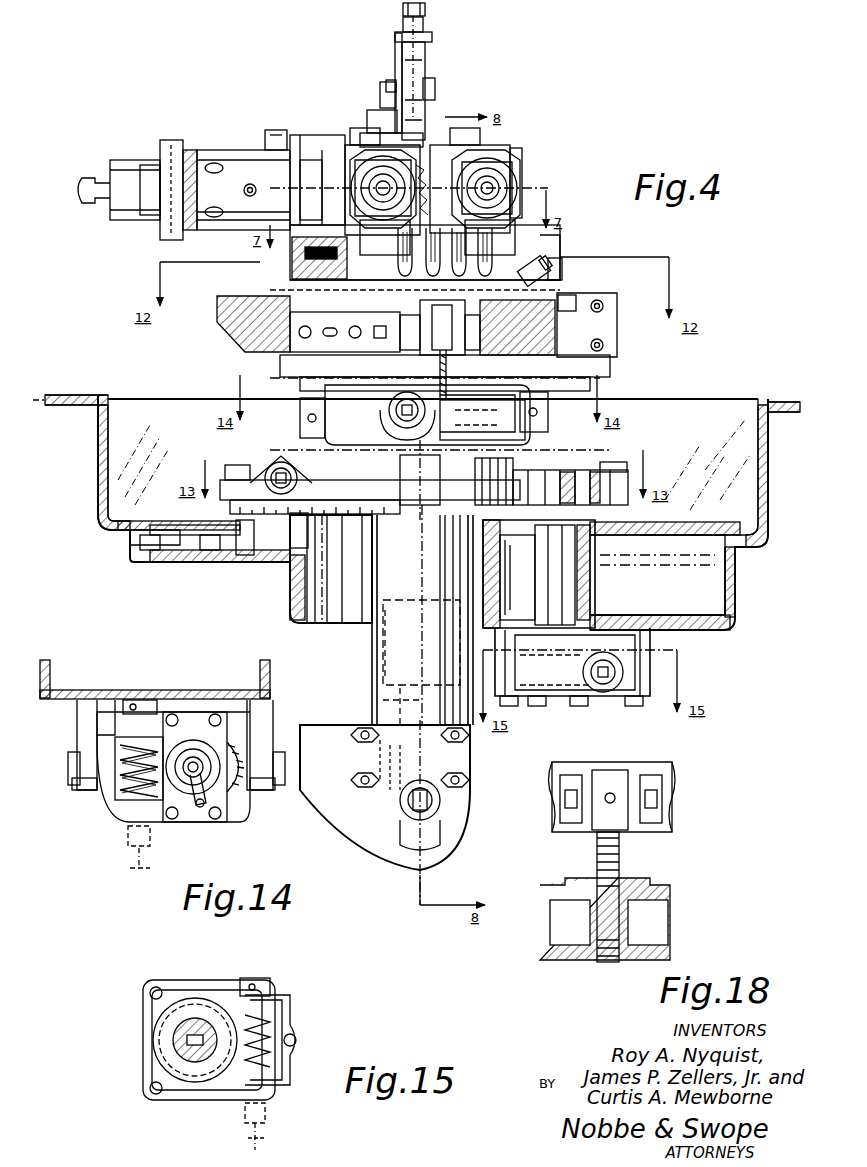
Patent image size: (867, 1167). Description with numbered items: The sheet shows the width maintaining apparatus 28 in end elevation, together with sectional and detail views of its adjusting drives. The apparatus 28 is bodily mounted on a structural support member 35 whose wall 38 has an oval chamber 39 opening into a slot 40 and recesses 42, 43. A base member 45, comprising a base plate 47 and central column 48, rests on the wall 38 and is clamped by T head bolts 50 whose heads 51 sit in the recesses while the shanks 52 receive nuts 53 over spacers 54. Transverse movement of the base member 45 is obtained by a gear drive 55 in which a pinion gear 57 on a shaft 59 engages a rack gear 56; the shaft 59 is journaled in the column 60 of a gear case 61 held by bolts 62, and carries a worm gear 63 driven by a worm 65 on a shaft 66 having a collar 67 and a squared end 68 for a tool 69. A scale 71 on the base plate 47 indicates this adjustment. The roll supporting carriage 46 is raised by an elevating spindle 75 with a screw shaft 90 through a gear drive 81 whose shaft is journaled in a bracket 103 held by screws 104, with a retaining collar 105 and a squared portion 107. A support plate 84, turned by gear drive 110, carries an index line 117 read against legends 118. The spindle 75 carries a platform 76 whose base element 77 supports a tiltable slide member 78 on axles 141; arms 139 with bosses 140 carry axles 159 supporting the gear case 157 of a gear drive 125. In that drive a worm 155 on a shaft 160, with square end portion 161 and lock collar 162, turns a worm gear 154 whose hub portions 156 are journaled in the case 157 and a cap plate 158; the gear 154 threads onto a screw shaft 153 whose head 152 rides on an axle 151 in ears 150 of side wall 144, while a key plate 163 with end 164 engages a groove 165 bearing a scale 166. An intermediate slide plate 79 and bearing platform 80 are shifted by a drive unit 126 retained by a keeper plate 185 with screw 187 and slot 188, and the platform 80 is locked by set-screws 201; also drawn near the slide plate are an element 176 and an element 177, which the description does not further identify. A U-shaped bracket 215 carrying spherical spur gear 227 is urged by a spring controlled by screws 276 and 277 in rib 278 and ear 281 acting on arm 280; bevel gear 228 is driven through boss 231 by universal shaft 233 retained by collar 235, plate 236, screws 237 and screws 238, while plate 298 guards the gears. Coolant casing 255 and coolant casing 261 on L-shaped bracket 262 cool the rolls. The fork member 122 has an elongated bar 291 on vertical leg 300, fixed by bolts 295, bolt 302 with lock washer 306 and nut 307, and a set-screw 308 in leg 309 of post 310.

In FIG. 4, the width maintaining apparatus 28 is at (230, 108).
In FIG. 4, the universal shaft 233 is at (92, 185).
In FIG. 4, the screws 238 is at (156, 210).
In FIG. 4, the retainer collar 235 is at (172, 142).
In FIG. 4, the plate 236 is at (193, 152).
In FIG. 4, the boss 231 is at (246, 162).
In FIG. 4, the screws 237 is at (243, 190).
In FIG. 4, the plate 298 is at (305, 135).
In FIG. 4, the bevel gear 228 is at (336, 160).
In FIG. 4, the coolant distributor casing 255 is at (362, 158).
In FIG. 4, the spherical spur gear 227 is at (434, 165).
In FIG. 4, the set-screw 308 is at (427, 11).
In FIG. 4, the horizontally disposed leg 309 is at (424, 30).
In FIG. 4, the post 310 is at (432, 46).
In FIG. 4, the nut 307 is at (398, 90).
In FIG. 4, the fork member 122 is at (428, 62).
In FIG. 4, the lock washer 306 is at (393, 92).
In FIG. 4, the bolts 295 is at (382, 108).
In FIG. 4, the elongated bar 291 is at (426, 75).
In FIG. 4, the bolt 302 is at (437, 92).
In FIG. 4, the vertical leg 300 is at (424, 110).
In FIG. 4, the L-shaped bracket 262 is at (515, 150).
In FIG. 4, the coolant casing 261 is at (505, 162).
In FIG. 4, the U-shaped bracket 215 is at (516, 178).
In FIG. 4, the screw 276 is at (288, 266).
In FIG. 4, the rib 278 is at (350, 230).
In FIG. 4, the arm 280 is at (523, 228).
In FIG. 4, the ear 281 is at (500, 256).
In FIG. 4, the screw 277 is at (545, 252).
In FIG. 4, the set-screws 201 is at (556, 270).
In FIG. 4, the intermediate slide plate 79 is at (250, 303).
In FIG. 4, the bearing platform 80 is at (268, 284).
In FIG. 4, the roll supporting carriage 46 is at (222, 325).
In FIG. 4, the tiltable slide member 78 is at (250, 338).
In FIG. 18, the tiltable slide member 78 is at (560, 770).
In FIG. 4, the screw 187 is at (303, 325).
In FIG. 4, the slot 188 is at (330, 325).
In FIG. 4, the keeper plate 185 is at (300, 344).
In FIG. 4, the head 152 is at (470, 322).
In FIG. 18, the head 152 is at (612, 780).
In FIG. 4, the screw shaft 153 is at (470, 356).
In FIG. 14, the screw shaft 153 is at (186, 757).
In FIG. 18, the screw shaft 153 is at (622, 865).
In FIG. 4, the drive unit 126 is at (322, 359).
In FIG. 4, the stop block 176 is at (577, 302).
In FIG. 4, the end bracket 177 is at (608, 307).
In FIG. 4, the axles 141 is at (582, 371).
In FIG. 4, the arms 139 is at (328, 389).
In FIG. 14, the arms 139 is at (78, 722).
In FIG. 4, the platform 76 is at (300, 407).
In FIG. 4, the base element 77 is at (332, 410).
In FIG. 14, the base element 77 is at (114, 688).
In FIG. 4, the axles 159 is at (340, 418).
In FIG. 14, the axles 159 is at (70, 762).
In FIG. 4, the gear drive 125 is at (408, 424).
In FIG. 14, the gear drive 125 is at (110, 815).
In FIG. 18, the gear drive 125 is at (692, 860).
In FIG. 4, the elevating spindle 75 is at (410, 441).
In FIG. 4, the gear case 157 is at (500, 426).
In FIG. 14, the gear case 157 is at (126, 822).
In FIG. 18, the gear case 157 is at (658, 947).
In FIG. 4, the spacers 54 is at (226, 487).
In FIG. 4, the scale 71 is at (354, 518).
In FIG. 4, the gear drive 110 is at (281, 462).
In FIG. 4, the nuts 53 is at (235, 466).
In FIG. 4, the T head bolts 50 is at (250, 466).
In FIG. 4, the index line 117 is at (426, 468).
In FIG. 4, the legends 118 is at (405, 506).
In FIG. 4, the support plate 84 is at (500, 463).
In FIG. 4, the rack gear 56 is at (548, 484).
In FIG. 4, the gear drive 55 is at (551, 478).
In FIG. 15, the gear drive 55 is at (143, 990).
In FIG. 4, the structural support member 35 is at (96, 503).
In FIG. 4, the wall 38 is at (130, 528).
In FIG. 4, the slot 40 is at (150, 548).
In FIG. 4, the recess 42 is at (174, 556).
In FIG. 4, the base plate 47 is at (228, 514).
In FIG. 4, the heads 51 is at (223, 536).
In FIG. 4, the shanks 52 is at (242, 526).
In FIG. 4, the chamber 39 is at (340, 572).
In FIG. 4, the base member 45 is at (372, 642).
In FIG. 4, the column 48 is at (375, 671).
In FIG. 4, the screw shaft 90 is at (380, 707).
In FIG. 4, the pinion gear 57 is at (530, 532).
In FIG. 4, the column 60 is at (560, 576).
In FIG. 4, the recess 43 is at (662, 560).
In FIG. 4, the bracket 103 is at (450, 760).
In FIG. 4, the screws 104 is at (362, 786).
In FIG. 4, the squared portion 107 is at (404, 806).
In FIG. 4, the retaining collar 105 is at (440, 810).
In FIG. 4, the gear drive 81 is at (402, 840).
In FIG. 14, the shaft 160 is at (180, 712).
In FIG. 14, the lock collar 162 is at (150, 700).
In FIG. 14, the bosses 140 is at (76, 782).
In FIG. 14, the worm 155 is at (122, 790).
In FIG. 14, the groove 165 is at (201, 757).
In FIG. 18, the groove 165 is at (606, 938).
In FIG. 14, the cap plate 158 is at (226, 806).
In FIG. 18, the cap plate 158 is at (566, 884).
In FIG. 14, the worm gear 154 is at (242, 790).
In FIG. 18, the worm gear 154 is at (658, 912).
In FIG. 14, the end 164 is at (174, 820).
In FIG. 18, the end 164 is at (596, 866).
In FIG. 14, the key plate 163 is at (207, 814).
In FIG. 14, the square end portion 161 is at (130, 846).
In FIG. 14, the tool 69 is at (142, 868).
In FIG. 15, the tool 69 is at (268, 1138).
In FIG. 15, the gear case 61 is at (205, 984).
In FIG. 15, the shaft 59 is at (184, 1040).
In FIG. 15, the bolts 62 is at (156, 988).
In FIG. 15, the shaft 66 is at (287, 1002).
In FIG. 15, the collar 67 is at (270, 985).
In FIG. 15, the worm 65 is at (276, 1058).
In FIG. 15, the worm gear 63 is at (228, 1046).
In FIG. 15, the squared end 68 is at (266, 1110).
In FIG. 18, the ears 150 is at (648, 780).
In FIG. 18, the axle 151 is at (660, 800).
In FIG. 18, the side wall 144 is at (565, 823).
In FIG. 18, the scale 166 is at (625, 845).
In FIG. 18, the hub portions 156 is at (632, 882).